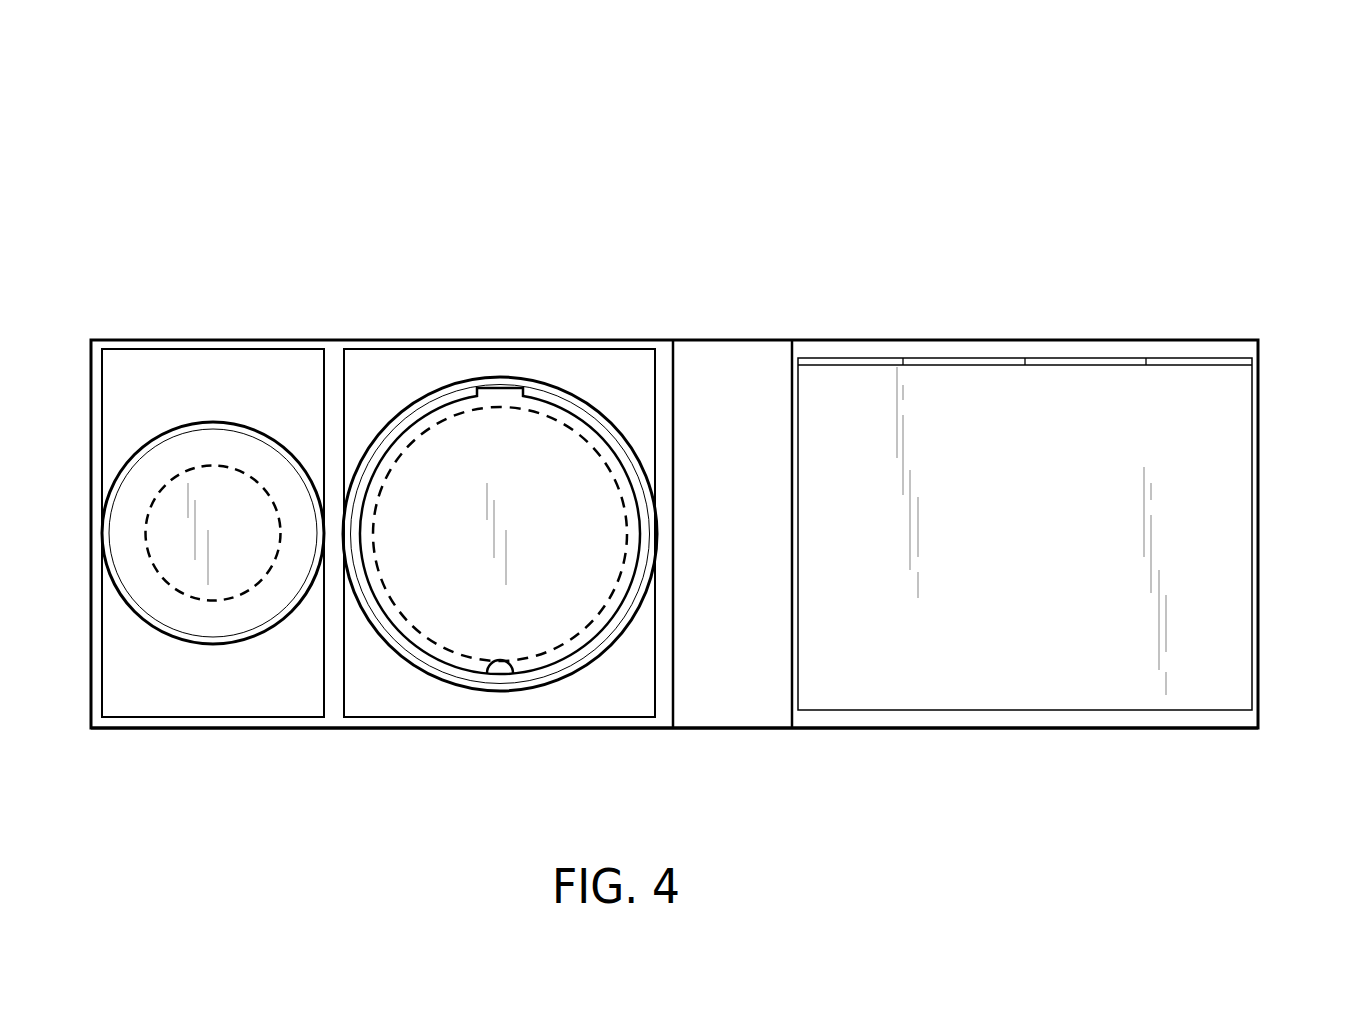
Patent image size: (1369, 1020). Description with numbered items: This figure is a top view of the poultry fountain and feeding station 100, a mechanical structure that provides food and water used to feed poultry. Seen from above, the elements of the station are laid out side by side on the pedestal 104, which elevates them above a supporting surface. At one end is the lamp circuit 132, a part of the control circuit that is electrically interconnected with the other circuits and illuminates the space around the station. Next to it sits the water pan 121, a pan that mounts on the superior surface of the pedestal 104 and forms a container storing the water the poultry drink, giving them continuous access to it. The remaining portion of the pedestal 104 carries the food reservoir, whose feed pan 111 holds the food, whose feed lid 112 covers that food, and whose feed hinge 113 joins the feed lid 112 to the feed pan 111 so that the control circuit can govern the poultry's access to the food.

The poultry fountain and feeding station 100 is at (173, 207).
The pedestal 104 is at (577, 729).
The feed pan 111 is at (1258, 340).
The feed lid 112 is at (1197, 523).
The feed hinge 113 is at (1090, 360).
The water pan 121 is at (534, 413).
The lamp circuit 132 is at (202, 452).